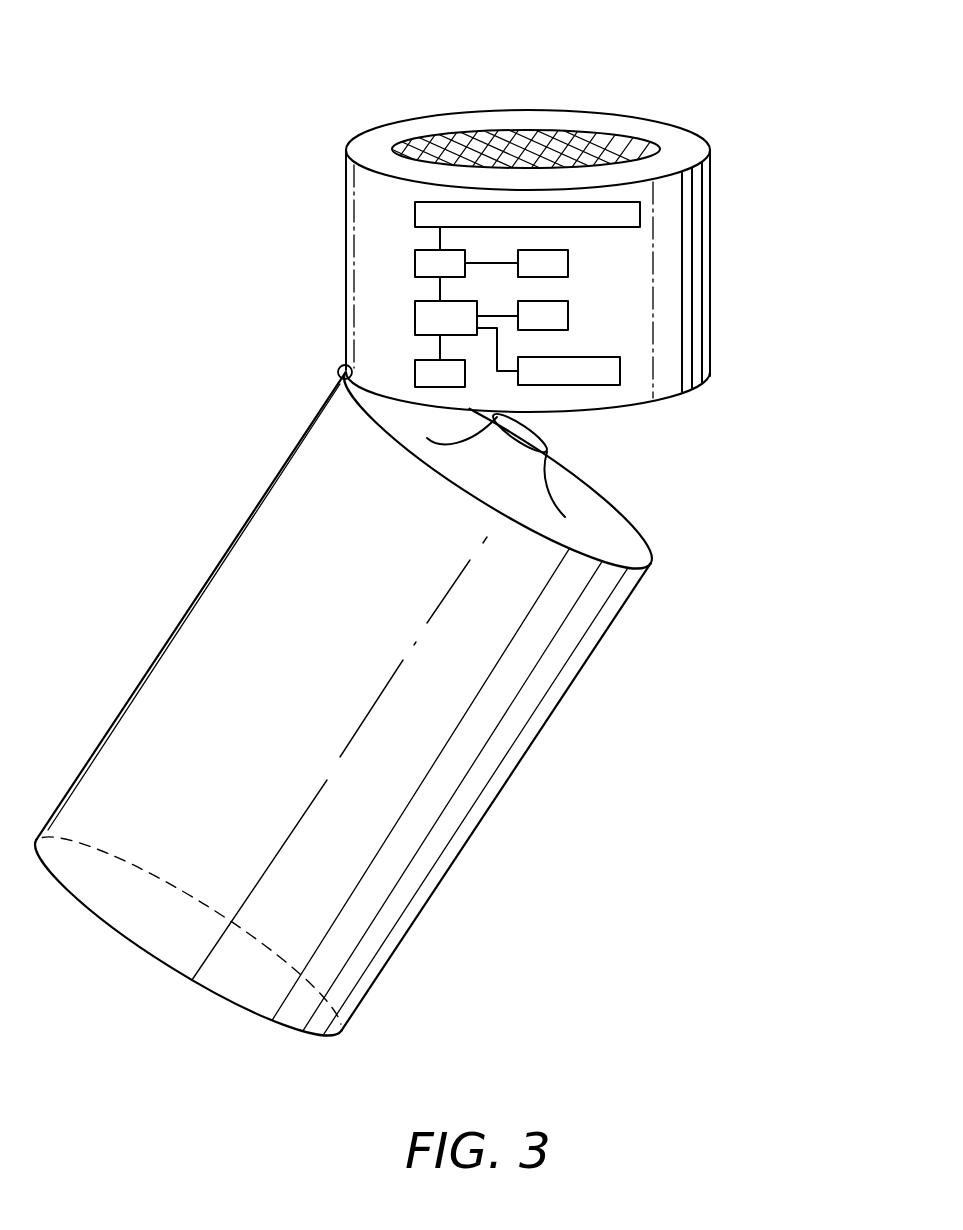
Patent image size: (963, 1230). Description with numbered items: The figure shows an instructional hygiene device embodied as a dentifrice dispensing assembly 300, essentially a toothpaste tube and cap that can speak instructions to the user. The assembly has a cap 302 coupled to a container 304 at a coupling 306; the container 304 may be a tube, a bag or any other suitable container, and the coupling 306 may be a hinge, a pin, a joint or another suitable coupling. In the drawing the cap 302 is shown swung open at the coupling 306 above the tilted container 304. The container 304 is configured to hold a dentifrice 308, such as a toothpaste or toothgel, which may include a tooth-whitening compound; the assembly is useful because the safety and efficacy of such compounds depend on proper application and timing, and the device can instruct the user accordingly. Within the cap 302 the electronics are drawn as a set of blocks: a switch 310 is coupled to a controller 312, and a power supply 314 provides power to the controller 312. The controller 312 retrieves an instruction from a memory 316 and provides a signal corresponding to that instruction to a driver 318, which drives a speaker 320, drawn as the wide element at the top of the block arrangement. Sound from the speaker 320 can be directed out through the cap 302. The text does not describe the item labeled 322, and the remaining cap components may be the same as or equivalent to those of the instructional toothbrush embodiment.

The dentifrice dispensing assembly 300 is at (170, 133).
The cap 302 is at (712, 205).
The container 304 is at (537, 737).
The coupling 306 is at (337, 368).
The dentifrice 308 is at (413, 873).
The switch 310 is at (413, 372).
The controller 312 is at (413, 318).
The power supply 314 is at (568, 317).
The memory 316 is at (620, 368).
The driver 318 is at (413, 263).
The speaker 320 is at (413, 214).
The indicator 322 is at (568, 264).